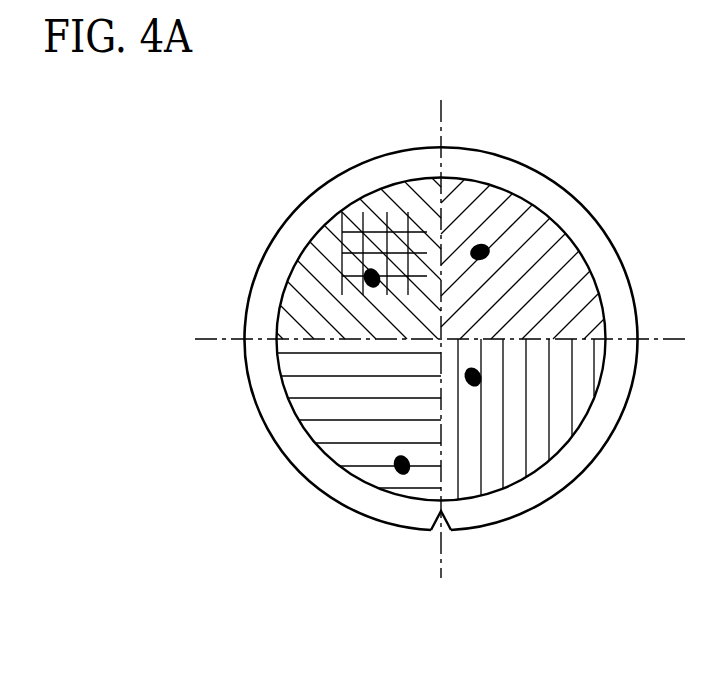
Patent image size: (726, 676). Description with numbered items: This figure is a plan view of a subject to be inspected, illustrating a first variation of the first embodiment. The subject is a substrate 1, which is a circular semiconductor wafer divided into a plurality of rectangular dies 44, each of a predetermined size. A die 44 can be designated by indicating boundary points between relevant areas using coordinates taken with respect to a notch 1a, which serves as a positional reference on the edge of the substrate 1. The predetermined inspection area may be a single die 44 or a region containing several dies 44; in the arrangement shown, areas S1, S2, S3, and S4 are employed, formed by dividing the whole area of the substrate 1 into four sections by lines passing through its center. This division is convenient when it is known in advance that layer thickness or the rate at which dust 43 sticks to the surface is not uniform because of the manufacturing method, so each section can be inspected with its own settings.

The substrate 1 is at (534, 136).
The notch 1a is at (444, 537).
The dust 43 is at (486, 248).
The die 44 is at (364, 232).
The area S1 is at (310, 290).
The area S2 is at (540, 265).
The area S3 is at (525, 438).
The area S4 is at (343, 422).